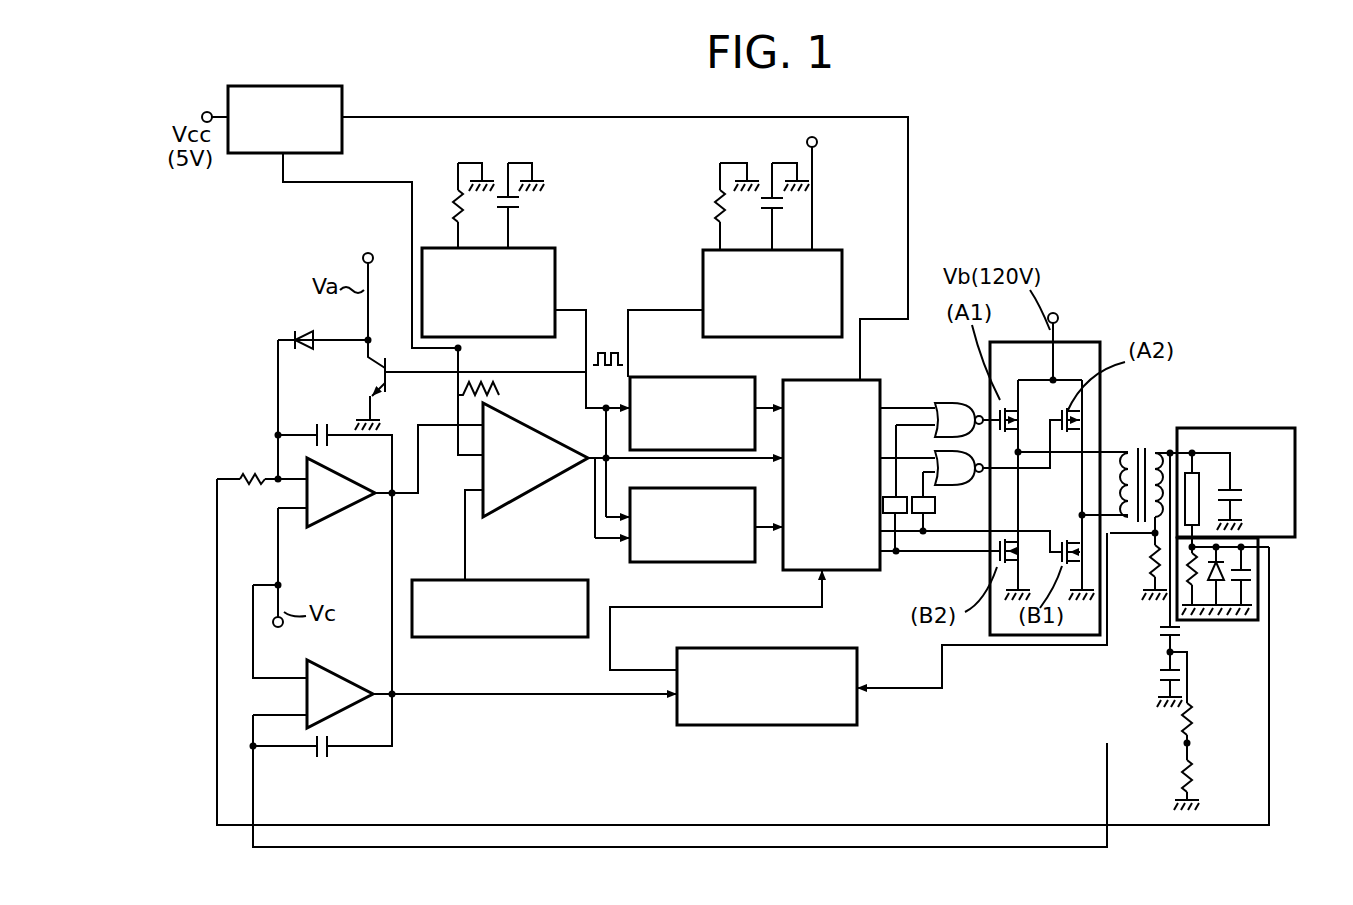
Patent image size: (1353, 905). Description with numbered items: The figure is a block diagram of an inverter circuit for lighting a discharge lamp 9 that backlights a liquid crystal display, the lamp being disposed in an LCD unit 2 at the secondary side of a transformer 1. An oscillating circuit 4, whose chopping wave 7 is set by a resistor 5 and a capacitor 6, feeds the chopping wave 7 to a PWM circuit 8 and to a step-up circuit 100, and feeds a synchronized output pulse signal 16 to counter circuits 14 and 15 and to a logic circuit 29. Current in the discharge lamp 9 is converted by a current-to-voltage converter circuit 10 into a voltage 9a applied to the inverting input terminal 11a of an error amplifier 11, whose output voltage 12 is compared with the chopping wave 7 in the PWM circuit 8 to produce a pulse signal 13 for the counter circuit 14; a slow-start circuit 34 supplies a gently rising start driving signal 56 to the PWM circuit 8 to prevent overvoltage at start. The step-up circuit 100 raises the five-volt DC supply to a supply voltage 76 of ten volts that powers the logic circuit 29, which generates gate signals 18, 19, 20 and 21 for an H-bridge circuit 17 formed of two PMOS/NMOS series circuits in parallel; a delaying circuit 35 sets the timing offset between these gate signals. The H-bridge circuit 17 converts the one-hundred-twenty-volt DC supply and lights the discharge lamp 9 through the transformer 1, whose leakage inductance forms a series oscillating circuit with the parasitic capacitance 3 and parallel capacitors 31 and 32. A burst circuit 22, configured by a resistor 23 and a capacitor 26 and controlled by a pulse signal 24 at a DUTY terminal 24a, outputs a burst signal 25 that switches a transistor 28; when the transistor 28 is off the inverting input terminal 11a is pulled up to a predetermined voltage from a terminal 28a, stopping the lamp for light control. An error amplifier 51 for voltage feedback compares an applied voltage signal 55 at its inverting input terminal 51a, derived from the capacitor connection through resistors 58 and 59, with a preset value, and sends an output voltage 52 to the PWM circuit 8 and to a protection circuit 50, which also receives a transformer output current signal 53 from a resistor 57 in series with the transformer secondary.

The transformer 1 is at (1137, 447).
The LCD unit 2 is at (1282, 428).
The parasitic capacitance 3 is at (1233, 490).
The oscillating circuit 4 is at (545, 250).
The resistor 5 is at (455, 195).
The capacitor 6 is at (504, 212).
The chopping wave 7 is at (455, 402).
The PWM circuit 8 is at (520, 498).
The discharge lamp 9 is at (1202, 469).
The voltage 9a is at (736, 823).
The current-to-voltage converter circuit 10 is at (1228, 625).
The error amplifier 11 is at (347, 514).
The inverting input terminal 11a is at (303, 483).
The output voltage 12 is at (400, 496).
The pulse signal 13 is at (591, 509).
The counter circuit 14 is at (722, 563).
The counter circuit 15 is at (685, 377).
The output pulse signal 16 is at (576, 307).
The H-bridge circuit 17 is at (1073, 340).
The gate signal 18 is at (998, 407).
The gate signal 19 is at (983, 472).
The gate signal 20 is at (935, 551).
The gate signal 21 is at (962, 553).
The burst circuit 22 is at (843, 290).
The resistor 23 is at (716, 210).
The pulse signal 24 is at (814, 209).
The DUTY terminal 24a is at (818, 143).
The burst signal 25 is at (678, 308).
The capacitor 26 is at (769, 190).
The transistor 28 is at (390, 357).
The terminal 28a is at (366, 253).
The logic circuit 29 is at (798, 378).
The capacitor 31 is at (1164, 638).
The capacitor 32 is at (1164, 681).
The slow-start circuit 34 is at (574, 580).
The delaying circuit 35 is at (920, 515).
The protection circuit 50 is at (800, 727).
The error amplifier for voltage feedback 51 is at (345, 713).
The inverting input terminal 51a is at (303, 714).
The output voltage 52 is at (395, 693).
The transformer output current signal 53 is at (903, 690).
The applied voltage signal 55 is at (971, 844).
The start driving signal 56 is at (470, 571).
The resistor 57 is at (1153, 553).
The resistor 58 is at (1193, 722).
The resistor 59 is at (1193, 766).
The supply voltage 76 is at (910, 208).
The step-up circuit 100 is at (262, 156).